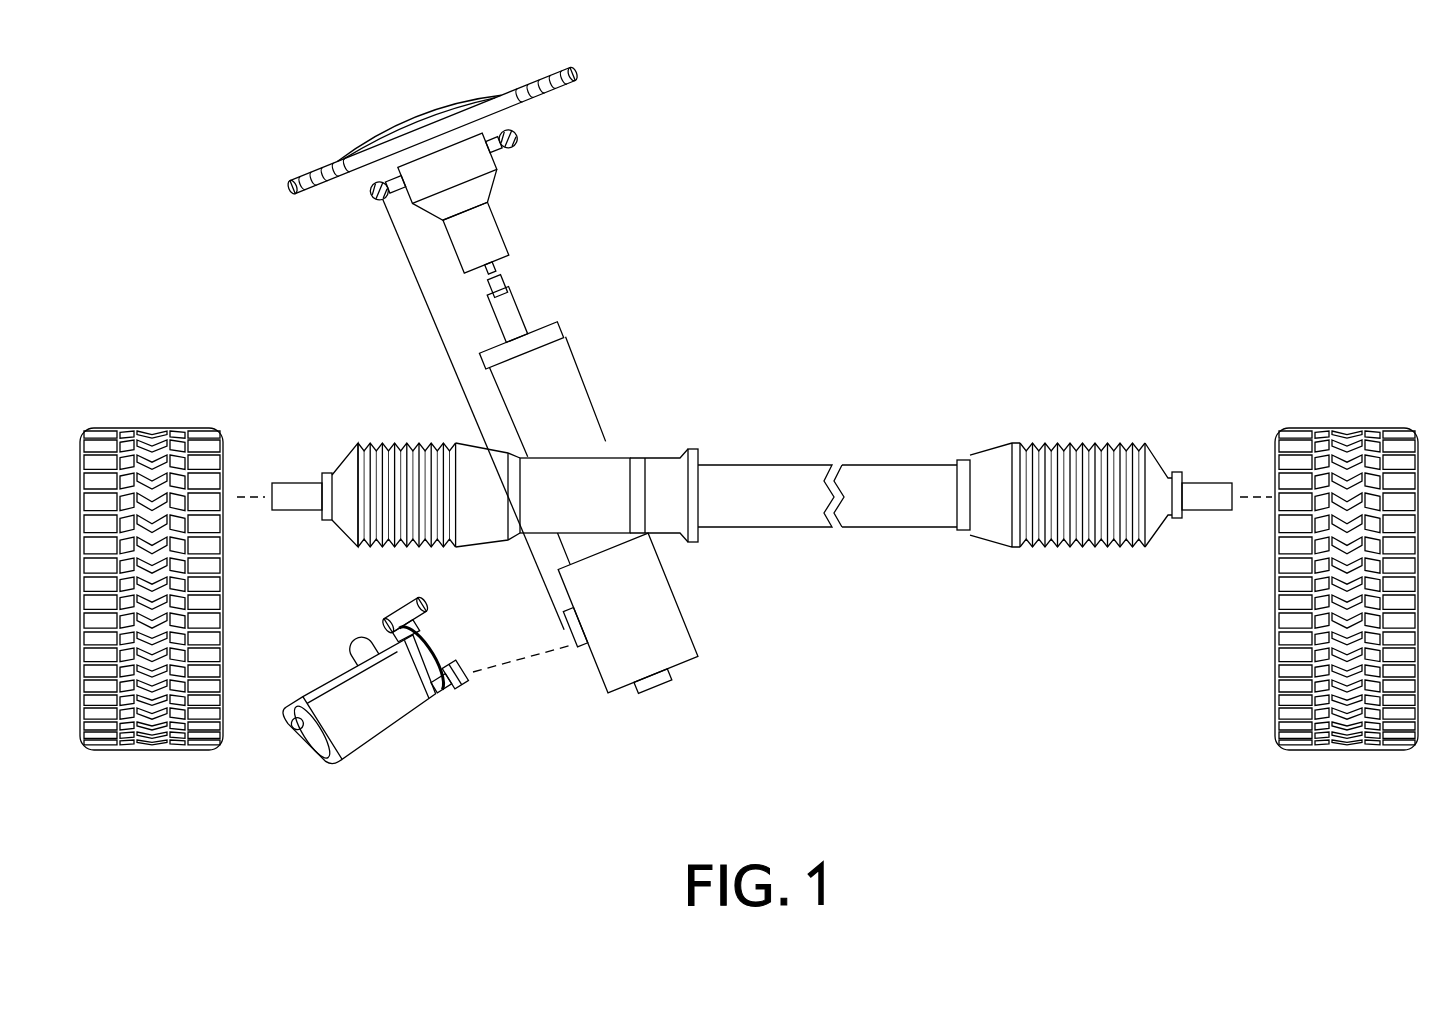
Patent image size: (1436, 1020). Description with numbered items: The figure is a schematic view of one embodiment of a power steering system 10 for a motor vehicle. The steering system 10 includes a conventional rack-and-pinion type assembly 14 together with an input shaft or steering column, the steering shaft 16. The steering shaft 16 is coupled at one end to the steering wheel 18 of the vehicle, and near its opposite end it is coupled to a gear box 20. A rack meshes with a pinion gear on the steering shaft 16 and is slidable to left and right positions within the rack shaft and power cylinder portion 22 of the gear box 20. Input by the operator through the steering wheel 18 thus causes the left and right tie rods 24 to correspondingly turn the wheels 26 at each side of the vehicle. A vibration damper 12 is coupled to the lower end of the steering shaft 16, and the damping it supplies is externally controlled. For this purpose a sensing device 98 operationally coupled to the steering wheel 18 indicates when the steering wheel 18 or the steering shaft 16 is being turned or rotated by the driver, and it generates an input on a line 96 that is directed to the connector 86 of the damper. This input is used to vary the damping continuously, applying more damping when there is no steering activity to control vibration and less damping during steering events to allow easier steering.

The power steering system 10 is at (866, 197).
The vibration damper 12 is at (773, 687).
The rack-and-pinion type assembly 14 is at (935, 538).
The steering shaft 16 is at (505, 282).
The steering wheel 18 is at (572, 80).
The gear box 20 is at (616, 458).
The rack shaft and power cylinder portion 22 is at (868, 465).
The tie rods 24 is at (283, 477).
The wheels 26 is at (160, 427).
The connector 86 is at (462, 692).
The line 96 is at (540, 584).
The sensing device 98 is at (516, 148).